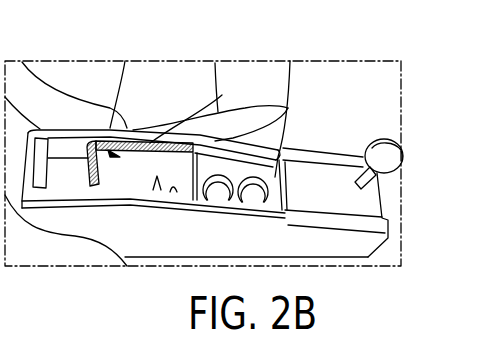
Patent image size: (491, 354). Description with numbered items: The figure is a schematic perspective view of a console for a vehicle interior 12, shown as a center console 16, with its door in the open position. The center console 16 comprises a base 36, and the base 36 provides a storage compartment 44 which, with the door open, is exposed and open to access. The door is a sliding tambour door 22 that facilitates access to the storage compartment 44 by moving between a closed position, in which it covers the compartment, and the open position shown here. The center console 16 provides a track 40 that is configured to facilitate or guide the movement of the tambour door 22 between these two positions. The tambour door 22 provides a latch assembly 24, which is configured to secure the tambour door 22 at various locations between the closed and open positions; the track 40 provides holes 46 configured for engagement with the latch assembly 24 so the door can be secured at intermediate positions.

The vehicle interior 12 is at (306, 89).
The center console 16 is at (318, 153).
The tambour door 22 is at (108, 150).
The latch assembly 24 is at (88, 168).
The base 36 is at (297, 245).
The track 40 is at (137, 148).
The storage compartment 44 is at (157, 178).
The holes 46 is at (155, 143).